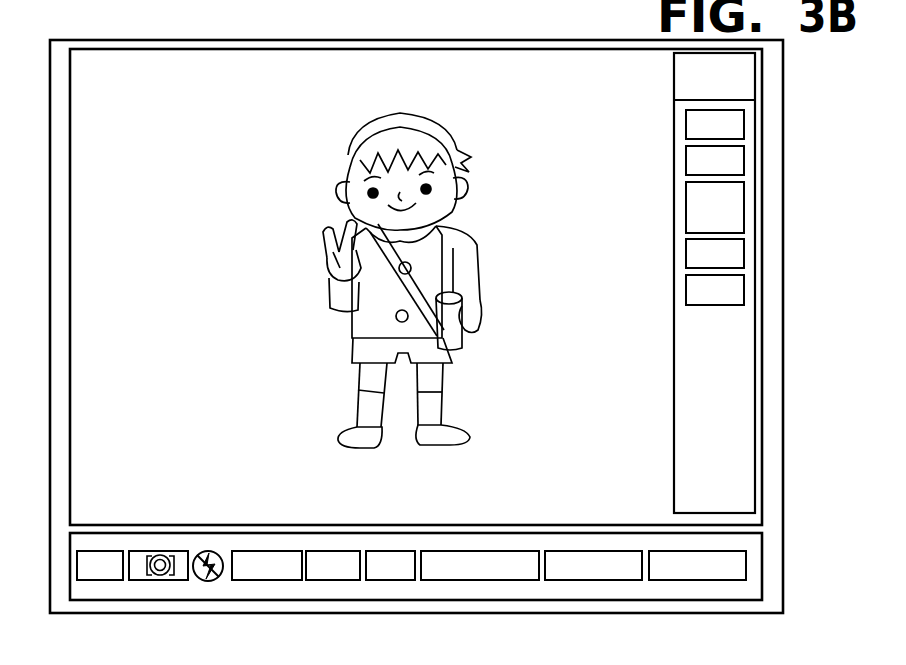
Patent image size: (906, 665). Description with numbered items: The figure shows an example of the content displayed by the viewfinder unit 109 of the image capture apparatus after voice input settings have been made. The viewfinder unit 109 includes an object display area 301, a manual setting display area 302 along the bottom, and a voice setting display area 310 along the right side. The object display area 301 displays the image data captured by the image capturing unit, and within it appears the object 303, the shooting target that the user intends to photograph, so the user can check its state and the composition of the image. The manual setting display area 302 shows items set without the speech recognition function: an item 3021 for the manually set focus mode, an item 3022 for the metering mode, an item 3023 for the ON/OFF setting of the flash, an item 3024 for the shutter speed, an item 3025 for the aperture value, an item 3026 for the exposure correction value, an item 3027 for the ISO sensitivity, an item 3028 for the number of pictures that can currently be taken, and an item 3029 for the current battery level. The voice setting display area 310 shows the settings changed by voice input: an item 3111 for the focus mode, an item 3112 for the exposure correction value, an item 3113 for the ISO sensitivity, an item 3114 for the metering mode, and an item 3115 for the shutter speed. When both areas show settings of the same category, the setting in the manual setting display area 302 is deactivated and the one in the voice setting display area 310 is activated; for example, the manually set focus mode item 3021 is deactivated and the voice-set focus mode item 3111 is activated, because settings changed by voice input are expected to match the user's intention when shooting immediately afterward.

The viewfinder unit 109 is at (526, 40).
The object display area 301 is at (237, 56).
The manual setting display area 302 is at (753, 590).
The object 303 is at (418, 113).
The voice setting display area 310 is at (755, 73).
The item 3111 is at (744, 120).
The item 3112 is at (744, 153).
The item 3113 is at (744, 207).
The item 3114 is at (744, 250).
The item 3115 is at (744, 285).
The item 3021 is at (97, 580).
The item 3022 is at (160, 580).
The item 3023 is at (208, 581).
The item 3024 is at (280, 580).
The item 3025 is at (348, 580).
The item 3026 is at (395, 580).
The item 3027 is at (518, 580).
The item 3028 is at (597, 580).
The item 3029 is at (697, 580).